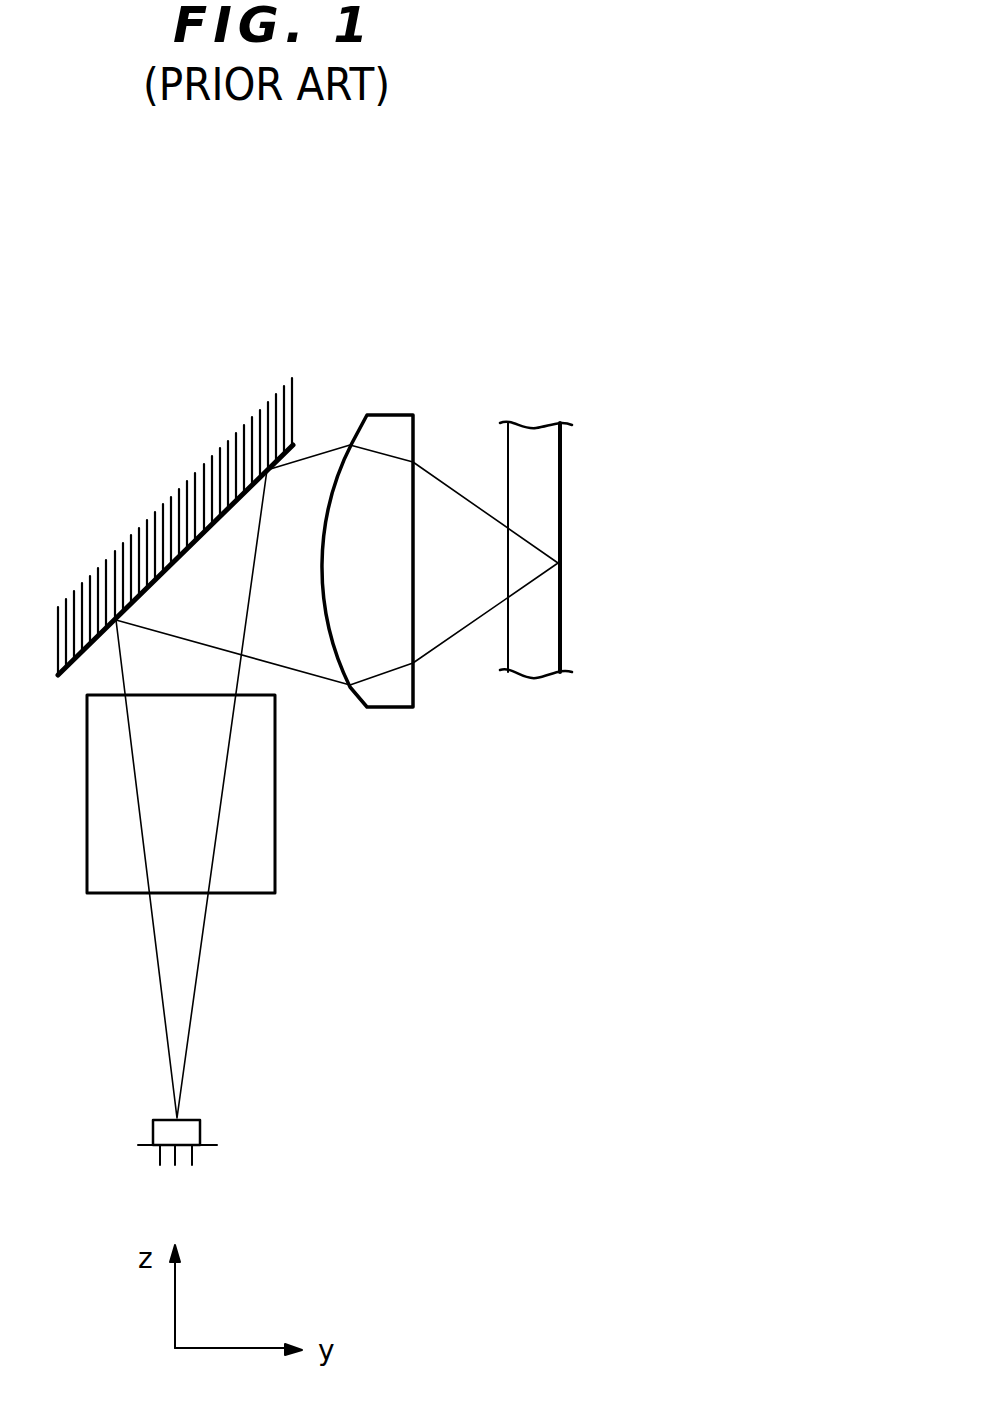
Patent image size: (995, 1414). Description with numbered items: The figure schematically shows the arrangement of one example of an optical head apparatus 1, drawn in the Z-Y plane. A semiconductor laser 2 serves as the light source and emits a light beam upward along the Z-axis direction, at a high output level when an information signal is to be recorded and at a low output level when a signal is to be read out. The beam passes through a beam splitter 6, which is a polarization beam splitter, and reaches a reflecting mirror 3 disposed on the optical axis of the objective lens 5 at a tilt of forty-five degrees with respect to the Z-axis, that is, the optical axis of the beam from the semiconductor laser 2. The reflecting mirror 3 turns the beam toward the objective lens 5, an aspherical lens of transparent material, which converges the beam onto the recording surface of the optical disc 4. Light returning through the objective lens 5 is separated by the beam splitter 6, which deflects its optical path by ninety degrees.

The optical head apparatus 1 is at (527, 350).
The semiconductor laser 2 is at (200, 1133).
The reflecting mirror 3 is at (158, 537).
The optical disc 4 is at (543, 630).
The objective lens 5 is at (402, 710).
The beam splitter 6 is at (282, 843).